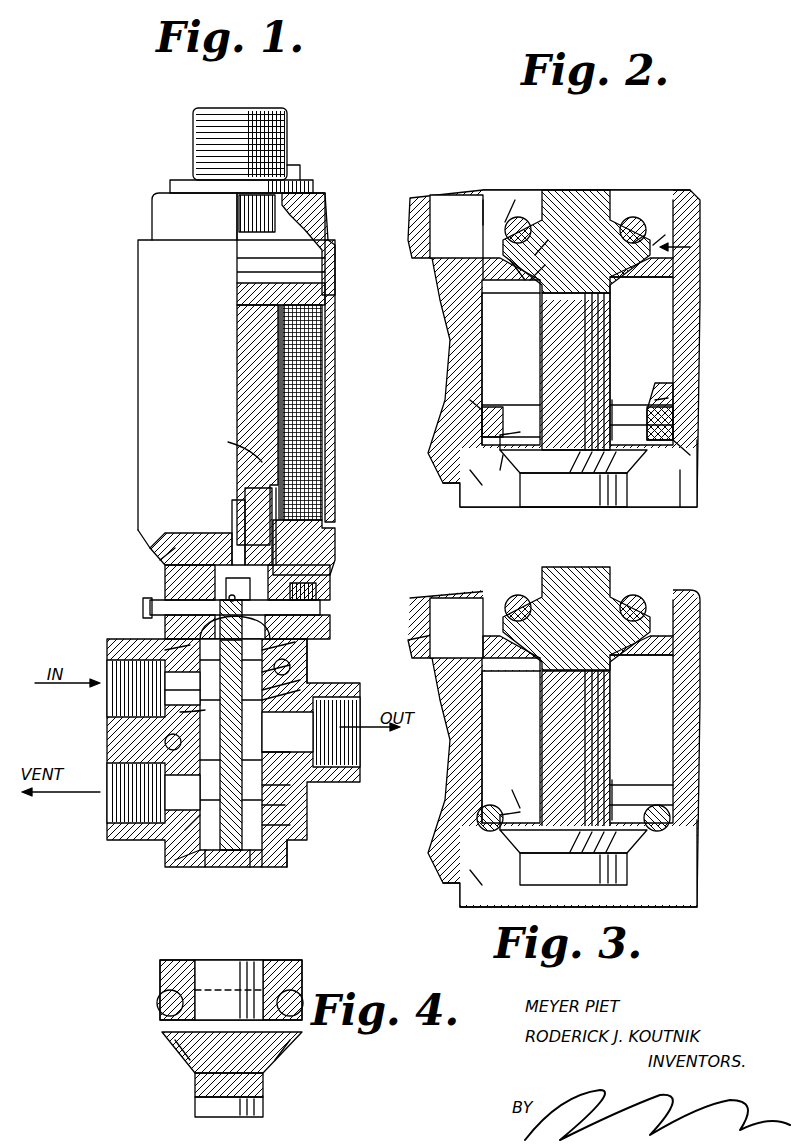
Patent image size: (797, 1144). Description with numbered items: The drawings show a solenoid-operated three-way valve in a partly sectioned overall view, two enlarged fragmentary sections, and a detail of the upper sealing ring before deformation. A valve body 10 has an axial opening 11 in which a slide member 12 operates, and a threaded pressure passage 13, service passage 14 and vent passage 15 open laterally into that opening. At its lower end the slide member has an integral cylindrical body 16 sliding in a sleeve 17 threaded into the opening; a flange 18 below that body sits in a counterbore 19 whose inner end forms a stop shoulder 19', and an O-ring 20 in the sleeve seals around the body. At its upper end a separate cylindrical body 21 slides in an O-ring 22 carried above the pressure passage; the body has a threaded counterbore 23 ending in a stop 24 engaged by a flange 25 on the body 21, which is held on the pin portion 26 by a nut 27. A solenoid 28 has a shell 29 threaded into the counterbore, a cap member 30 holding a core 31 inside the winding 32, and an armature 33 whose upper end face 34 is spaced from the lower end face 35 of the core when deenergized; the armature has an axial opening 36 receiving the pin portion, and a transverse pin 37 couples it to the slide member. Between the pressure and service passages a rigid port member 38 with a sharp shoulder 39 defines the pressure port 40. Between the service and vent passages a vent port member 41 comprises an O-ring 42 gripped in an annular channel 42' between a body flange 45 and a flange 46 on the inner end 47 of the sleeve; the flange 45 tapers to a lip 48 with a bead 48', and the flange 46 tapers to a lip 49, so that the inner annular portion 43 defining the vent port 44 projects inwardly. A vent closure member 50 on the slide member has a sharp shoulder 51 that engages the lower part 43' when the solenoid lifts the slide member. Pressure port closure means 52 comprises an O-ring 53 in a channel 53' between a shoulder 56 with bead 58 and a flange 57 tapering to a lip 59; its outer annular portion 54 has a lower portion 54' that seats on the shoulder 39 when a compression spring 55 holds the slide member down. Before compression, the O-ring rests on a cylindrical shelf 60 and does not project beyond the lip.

In FIG. 1, the valve body 10 is at (135, 740).
In FIG. 1, the axial opening 11 is at (290, 665).
In FIG. 1, the slide member 12 is at (285, 805).
In FIG. 2, the slide member 12 is at (580, 205).
In FIG. 3, the slide member 12 is at (576, 618).
In FIG. 1, the pressure passage 13 is at (170, 680).
In FIG. 2, the pressure passage 13 is at (445, 222).
In FIG. 3, the pressure passage 13 is at (465, 610).
In FIG. 1, the service passage 14 is at (300, 725).
In FIG. 2, the service passage 14 is at (683, 355).
In FIG. 3, the service passage 14 is at (680, 745).
In FIG. 1, the vent passage 15 is at (165, 790).
In FIG. 2, the vent passage 15 is at (455, 490).
In FIG. 3, the vent passage 15 is at (445, 895).
In FIG. 1, the cylindrical body 16 is at (195, 862).
In FIG. 1, the sleeve 17 is at (290, 828).
In FIG. 2, the sleeve 17 is at (685, 485).
In FIG. 1, the flange 18 is at (262, 867).
In FIG. 1, the counterbore 19 is at (207, 883).
In FIG. 1, the stop shoulder 19' is at (238, 873).
In FIG. 1, the O-ring 20 is at (290, 860).
In FIG. 1, the cylindrical body 21 is at (295, 642).
In FIG. 4, the cylindrical body 21 is at (275, 960).
In FIG. 1, the O-ring 22 is at (333, 656).
In FIG. 1, the counterbore 23 is at (163, 563).
In FIG. 1, the stop 24 is at (165, 650).
In FIG. 1, the flange 25 is at (180, 635).
In FIG. 1, the pin portion 26 is at (242, 630).
In FIG. 2, the pin portion 26 is at (575, 290).
In FIG. 3, the pin portion 26 is at (560, 693).
In FIG. 4, the pin portion 26 is at (263, 1097).
In FIG. 1, the nut 27 is at (262, 610).
In FIG. 1, the solenoid 28 is at (187, 394).
In FIG. 1, the shell 29 is at (335, 465).
In FIG. 1, the cap member 30 is at (313, 200).
In FIG. 1, the core 31 is at (240, 316).
In FIG. 1, the solenoid winding 32 is at (318, 372).
In FIG. 1, the armature 33 is at (250, 520).
In FIG. 1, the upper end face 34 is at (256, 488).
In FIG. 1, the lower end face 35 is at (235, 496).
In FIG. 1, the axial opening 36 is at (235, 548).
In FIG. 1, the transverse pin 37 is at (228, 598).
In FIG. 1, the port member 38 is at (300, 680).
In FIG. 2, the port member 38 is at (690, 247).
In FIG. 2, the annular shoulder 39 is at (700, 218).
In FIG. 3, the annular shoulder 39 is at (700, 613).
In FIG. 1, the pressure port 40 is at (300, 690).
In FIG. 2, the pressure port 40 is at (615, 300).
In FIG. 3, the pressure port 40 is at (640, 660).
In FIG. 1, the vent port member 41 is at (185, 756).
In FIG. 2, the vent port member 41 is at (670, 395).
In FIG. 1, the O-ring 42 is at (298, 790).
In FIG. 2, the O-ring 42 is at (689, 424).
In FIG. 3, the O-ring 42 is at (454, 809).
In FIG. 2, the annular channel 42' is at (699, 389).
In FIG. 2, the inner annular portion 43 is at (641, 385).
In FIG. 3, the inner annular portion 43 is at (641, 785).
In FIG. 3, the lower part 43' is at (689, 810).
In FIG. 1, the vent port 44 is at (290, 750).
In FIG. 2, the vent port 44 is at (615, 420).
In FIG. 3, the vent port 44 is at (615, 800).
In FIG. 2, the flange 45 is at (470, 400).
In FIG. 2, the flange 46 is at (482, 437).
In FIG. 2, the inner end 47 is at (690, 458).
In FIG. 2, the lip 48 is at (511, 369).
In FIG. 2, the bead 48' is at (511, 397).
In FIG. 2, the lip 49 is at (510, 440).
In FIG. 3, the lip 49 is at (505, 830).
In FIG. 1, the vent closure member 50 is at (205, 812).
In FIG. 2, the vent closure member 50 is at (555, 470).
In FIG. 3, the vent closure member 50 is at (620, 850).
In FIG. 2, the annular shoulder 51 is at (503, 460).
In FIG. 3, the annular shoulder 51 is at (520, 808).
In FIG. 1, the pressure port closure means 52 is at (200, 690).
In FIG. 2, the pressure port closure means 52 is at (633, 243).
In FIG. 1, the O-ring 53 is at (139, 715).
In FIG. 2, the O-ring 53 is at (648, 201).
In FIG. 3, the O-ring 53 is at (656, 589).
In FIG. 4, the O-ring 53 is at (307, 978).
In FIG. 2, the annular channel 53' is at (551, 208).
In FIG. 2, the outer annular portion 54 is at (682, 206).
In FIG. 2, the lower portion 54' is at (499, 191).
In FIG. 1, the compression spring 55 is at (190, 608).
In FIG. 2, the shoulder 56 is at (520, 218).
In FIG. 4, the shoulder 56 is at (172, 990).
In FIG. 2, the flange 57 is at (530, 280).
In FIG. 4, the flange 57 is at (305, 1062).
In FIG. 2, the bead 58 is at (500, 215).
In FIG. 2, the lip 59 is at (510, 262).
In FIG. 3, the lip 59 is at (505, 612).
In FIG. 4, the lip 59 is at (162, 1033).
In FIG. 4, the cylindrical shelf 60 is at (205, 975).